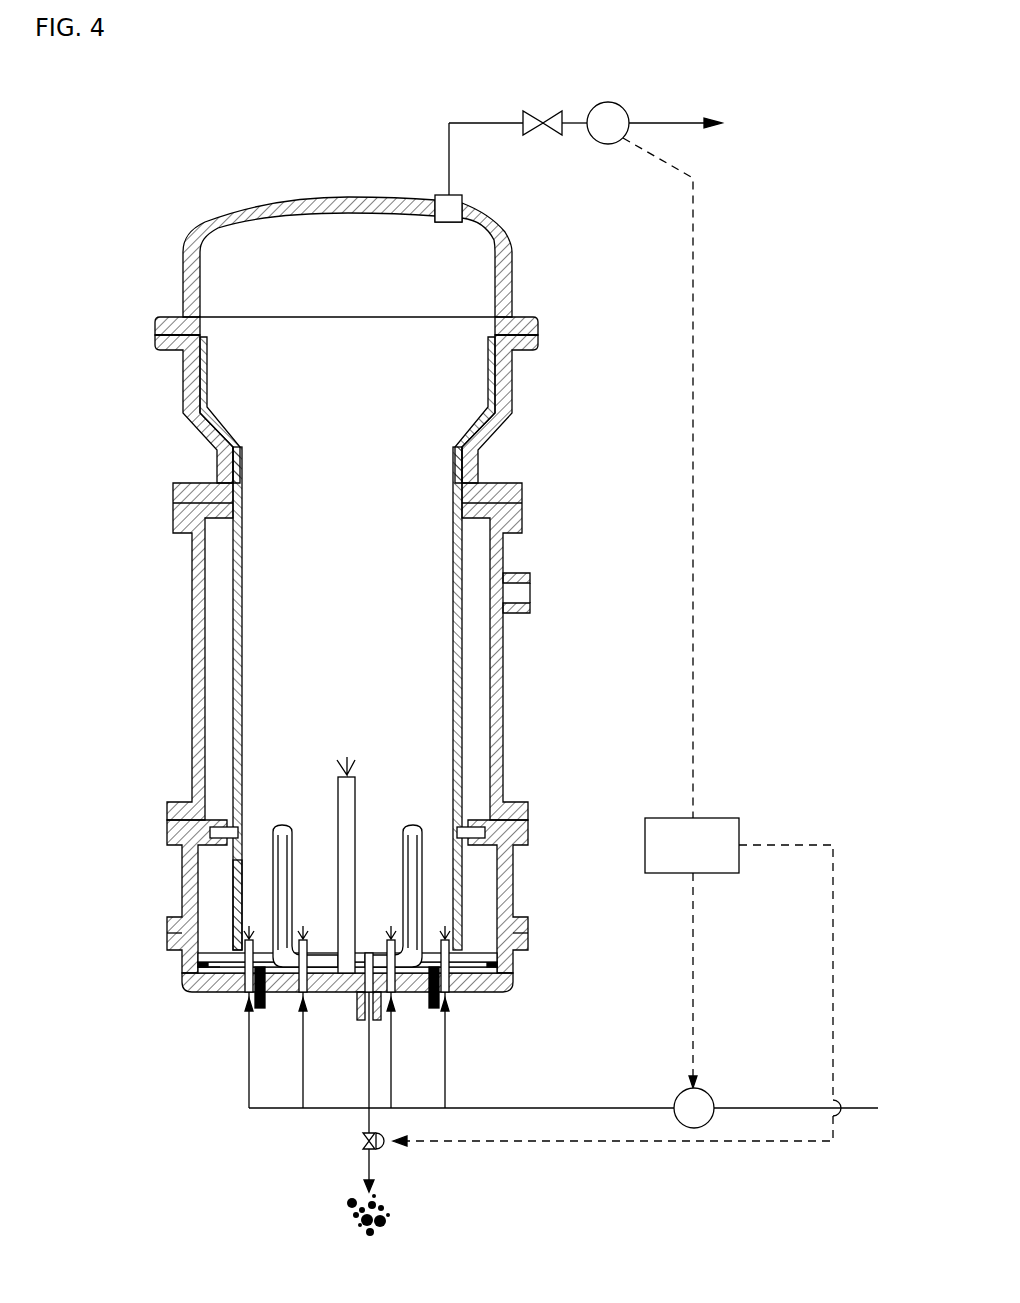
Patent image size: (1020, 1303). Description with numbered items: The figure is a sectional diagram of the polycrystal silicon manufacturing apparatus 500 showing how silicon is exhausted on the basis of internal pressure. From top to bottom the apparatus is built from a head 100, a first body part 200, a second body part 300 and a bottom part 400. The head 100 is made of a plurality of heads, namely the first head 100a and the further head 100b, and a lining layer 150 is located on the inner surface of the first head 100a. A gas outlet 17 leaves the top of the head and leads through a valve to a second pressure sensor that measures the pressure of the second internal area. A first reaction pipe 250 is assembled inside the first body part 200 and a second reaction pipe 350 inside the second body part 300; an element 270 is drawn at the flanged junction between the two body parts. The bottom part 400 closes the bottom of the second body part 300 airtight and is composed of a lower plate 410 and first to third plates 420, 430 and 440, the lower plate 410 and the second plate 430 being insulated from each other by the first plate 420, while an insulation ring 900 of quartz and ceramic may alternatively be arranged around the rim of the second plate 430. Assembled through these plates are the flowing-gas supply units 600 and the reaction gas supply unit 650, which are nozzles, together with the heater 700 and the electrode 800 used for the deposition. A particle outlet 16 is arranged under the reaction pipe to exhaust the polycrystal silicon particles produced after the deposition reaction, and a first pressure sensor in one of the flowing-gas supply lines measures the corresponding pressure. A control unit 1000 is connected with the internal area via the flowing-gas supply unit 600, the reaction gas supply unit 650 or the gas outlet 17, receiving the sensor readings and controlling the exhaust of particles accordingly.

The polycrystal silicon manufacturing apparatus 500 is at (146, 135).
The head 100 is at (70, 295).
The first head 100a is at (183, 395).
The head 100b is at (183, 272).
The lining layer 150 is at (512, 378).
The gas outlet 17 is at (445, 202).
The first body part 200 is at (196, 685).
The first reaction pipe 250 is at (239, 608).
The liner support slot 270 is at (222, 830).
The second body part 300 is at (185, 869).
The second reaction pipe 350 is at (235, 909).
The bottom part 400 is at (391, 979).
The lower plate 410 is at (483, 986).
The first plate 420 is at (487, 971).
The second plate 430 is at (487, 964).
The third plate 440 is at (487, 955).
The flowing-gas supply unit 600 is at (243, 992).
The reaction gas supply unit 650 is at (352, 792).
The heater 700 is at (420, 866).
The electrode 800 is at (262, 1010).
The insulation ring 900 is at (196, 967).
The particle outlet 16 is at (362, 1022).
The control unit 1000 is at (717, 818).